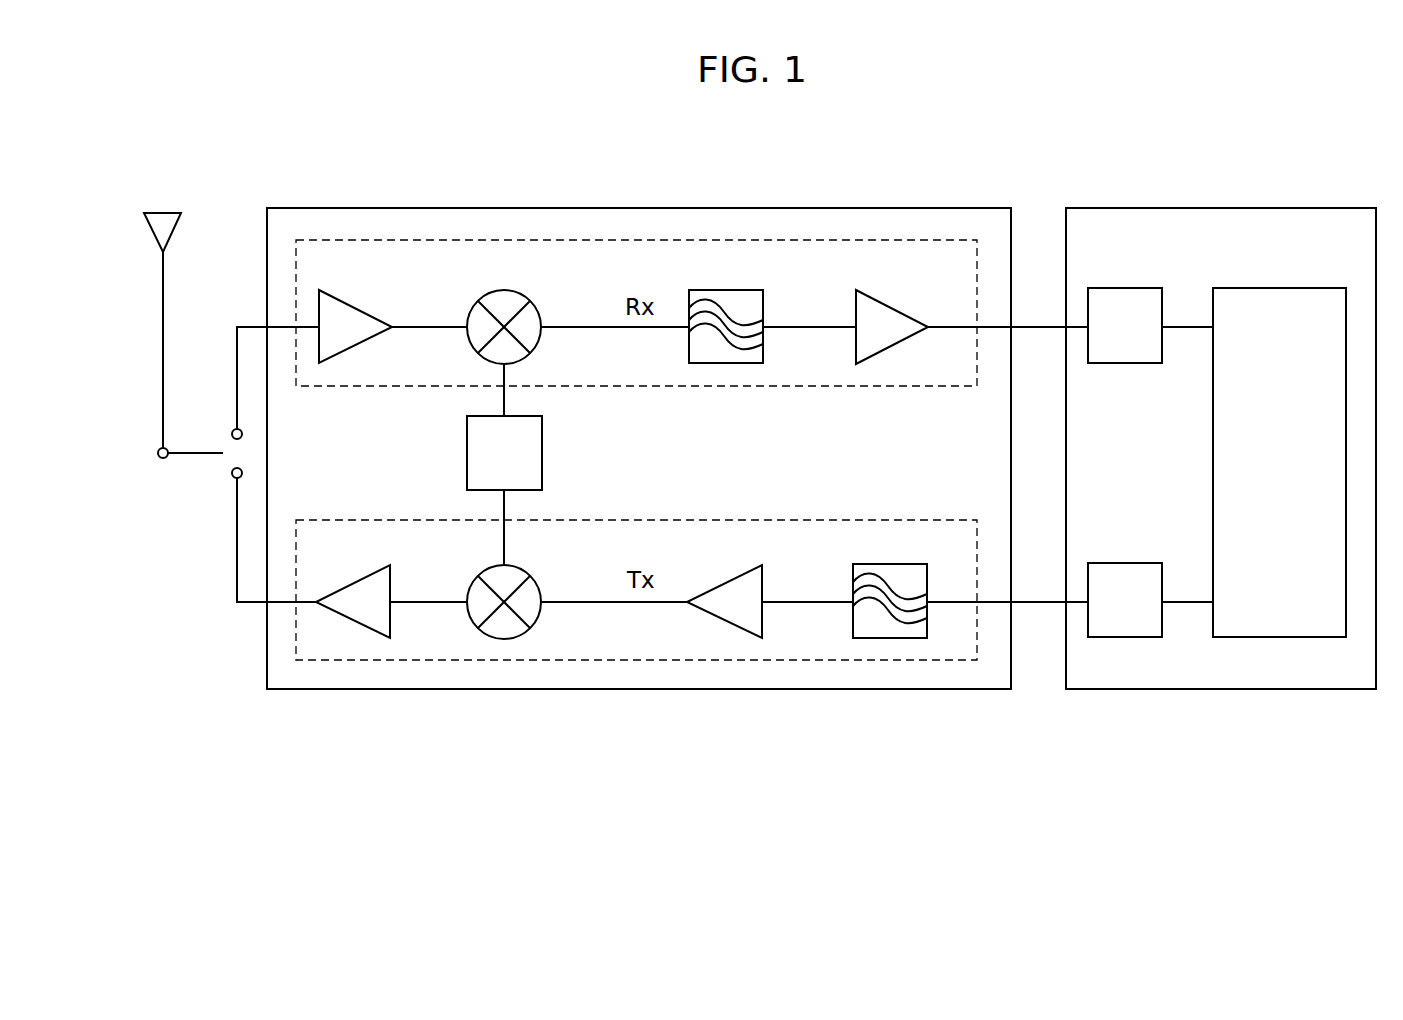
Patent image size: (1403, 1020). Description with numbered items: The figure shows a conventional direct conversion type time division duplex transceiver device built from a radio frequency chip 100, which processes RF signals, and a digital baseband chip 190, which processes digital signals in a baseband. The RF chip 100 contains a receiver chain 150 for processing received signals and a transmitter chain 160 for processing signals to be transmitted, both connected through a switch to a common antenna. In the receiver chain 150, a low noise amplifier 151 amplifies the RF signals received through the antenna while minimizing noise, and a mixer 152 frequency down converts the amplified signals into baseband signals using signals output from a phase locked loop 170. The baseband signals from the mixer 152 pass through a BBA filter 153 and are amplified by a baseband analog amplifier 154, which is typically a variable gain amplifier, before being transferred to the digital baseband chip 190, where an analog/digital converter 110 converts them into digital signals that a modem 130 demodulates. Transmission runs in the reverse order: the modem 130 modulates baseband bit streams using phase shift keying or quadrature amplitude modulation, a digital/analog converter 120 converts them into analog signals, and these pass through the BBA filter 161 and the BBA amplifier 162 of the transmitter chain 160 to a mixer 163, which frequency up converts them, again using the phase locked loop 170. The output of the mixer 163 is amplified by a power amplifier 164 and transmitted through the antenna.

The radio frequency (RF) chip 100 is at (640, 208).
The analog/digital (A/D) converter 110 is at (1127, 288).
The digital/analog (D/A) converter 120 is at (1127, 563).
The modem 130 is at (1280, 288).
The receiver chain 150 is at (693, 386).
The low noise amplifier 151 is at (357, 308).
The mixer 152 is at (540, 312).
The BBA filter 153 is at (735, 290).
The baseband analog (BBA) amplifier 154 is at (893, 308).
The transmitter chain 160 is at (695, 520).
The BBA filter 161 is at (893, 564).
The BBA amplifier 162 is at (763, 582).
The mixer 163 is at (540, 590).
The power amplifier 164 is at (391, 580).
The phase locked loop (PLL) 170 is at (542, 455).
The digital baseband chip 190 is at (1213, 208).